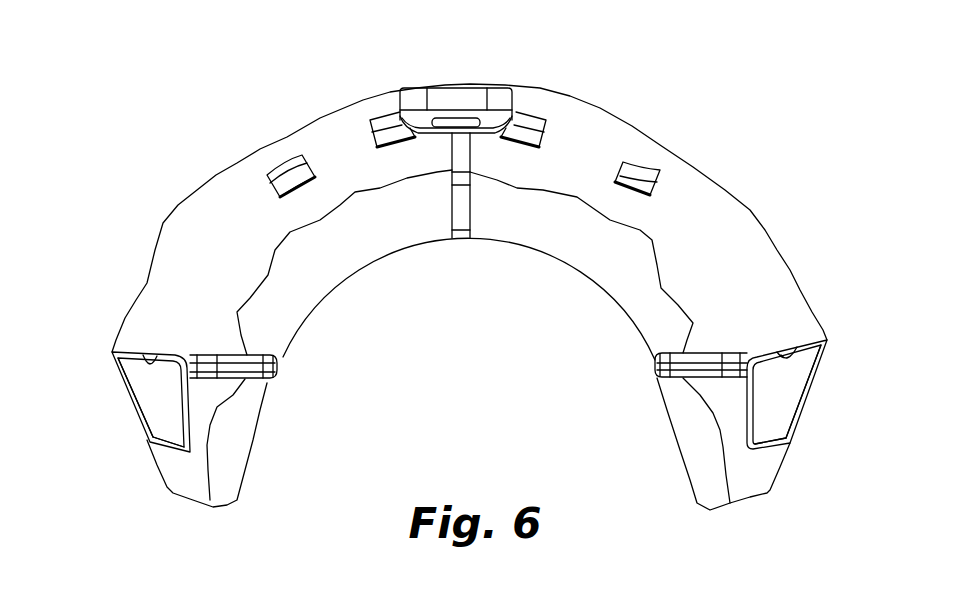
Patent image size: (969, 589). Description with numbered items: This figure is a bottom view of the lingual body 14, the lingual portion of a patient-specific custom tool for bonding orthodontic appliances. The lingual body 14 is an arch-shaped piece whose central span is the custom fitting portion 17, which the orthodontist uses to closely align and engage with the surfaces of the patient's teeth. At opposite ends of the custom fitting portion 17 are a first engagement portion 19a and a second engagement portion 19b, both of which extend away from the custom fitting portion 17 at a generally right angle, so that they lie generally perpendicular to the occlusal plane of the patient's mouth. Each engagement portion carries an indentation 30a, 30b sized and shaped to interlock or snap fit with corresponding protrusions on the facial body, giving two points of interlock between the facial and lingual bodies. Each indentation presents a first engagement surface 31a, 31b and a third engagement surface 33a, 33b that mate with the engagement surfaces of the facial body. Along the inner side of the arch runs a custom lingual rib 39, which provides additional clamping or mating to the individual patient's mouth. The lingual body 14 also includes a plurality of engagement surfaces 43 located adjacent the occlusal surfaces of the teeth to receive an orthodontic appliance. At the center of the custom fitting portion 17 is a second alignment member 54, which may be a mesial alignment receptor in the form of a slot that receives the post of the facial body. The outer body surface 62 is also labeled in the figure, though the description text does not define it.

The lingual body 14 is at (132, 178).
The custom fitting portion 17 is at (376, 96).
The second alignment member 54 is at (455, 100).
The outer body 62 is at (592, 137).
The engagement surface 43 is at (278, 189).
The custom lingual rib 39 is at (597, 255).
The first engagement surface 31a is at (812, 330).
The first engagement surface 31b is at (143, 357).
The indentation 30a is at (803, 375).
The indentation 30b is at (137, 380).
The third engagement surface 33a is at (793, 405).
The third engagement surface 33b is at (138, 390).
The first engagement portion 19a is at (787, 450).
The second engagement portion 19b is at (160, 418).